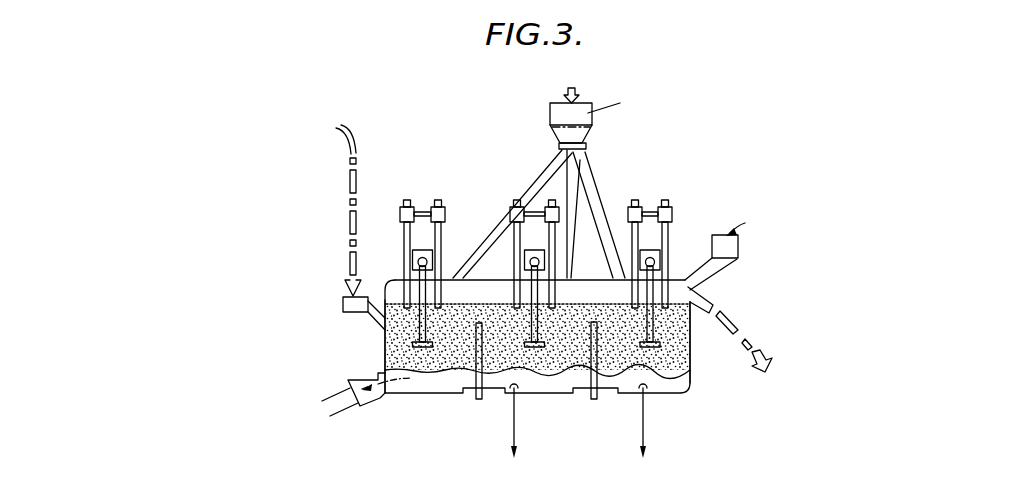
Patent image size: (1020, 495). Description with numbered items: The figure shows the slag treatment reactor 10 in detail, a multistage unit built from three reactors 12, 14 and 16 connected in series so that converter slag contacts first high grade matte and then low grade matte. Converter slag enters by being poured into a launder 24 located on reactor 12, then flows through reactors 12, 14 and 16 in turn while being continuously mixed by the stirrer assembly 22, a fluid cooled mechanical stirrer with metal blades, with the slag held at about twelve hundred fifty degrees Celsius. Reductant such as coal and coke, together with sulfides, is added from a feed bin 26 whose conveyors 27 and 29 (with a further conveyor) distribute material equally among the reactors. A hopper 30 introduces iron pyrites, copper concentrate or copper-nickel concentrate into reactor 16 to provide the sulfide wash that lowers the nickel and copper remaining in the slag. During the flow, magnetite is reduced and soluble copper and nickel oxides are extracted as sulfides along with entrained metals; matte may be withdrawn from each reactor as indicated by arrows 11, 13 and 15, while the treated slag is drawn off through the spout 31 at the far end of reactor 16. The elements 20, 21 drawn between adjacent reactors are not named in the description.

The multistage reactor 10 is at (447, 404).
The arrow 11 is at (364, 406).
The reactor 12 is at (383, 343).
The arrow 13 is at (527, 433).
The reactor 14 is at (528, 398).
The arrow 15 is at (647, 431).
The reactor 16 is at (690, 357).
The partition baffle 20 is at (482, 400).
The partition baffle 21 is at (597, 400).
The stirrer assembly 22 is at (528, 200).
The launder 24 is at (343, 300).
The feed bin 26 is at (548, 113).
The conveyor 27 is at (553, 163).
The conveyor 29 is at (578, 194).
The hopper 30 is at (739, 248).
The spout 31 is at (713, 290).